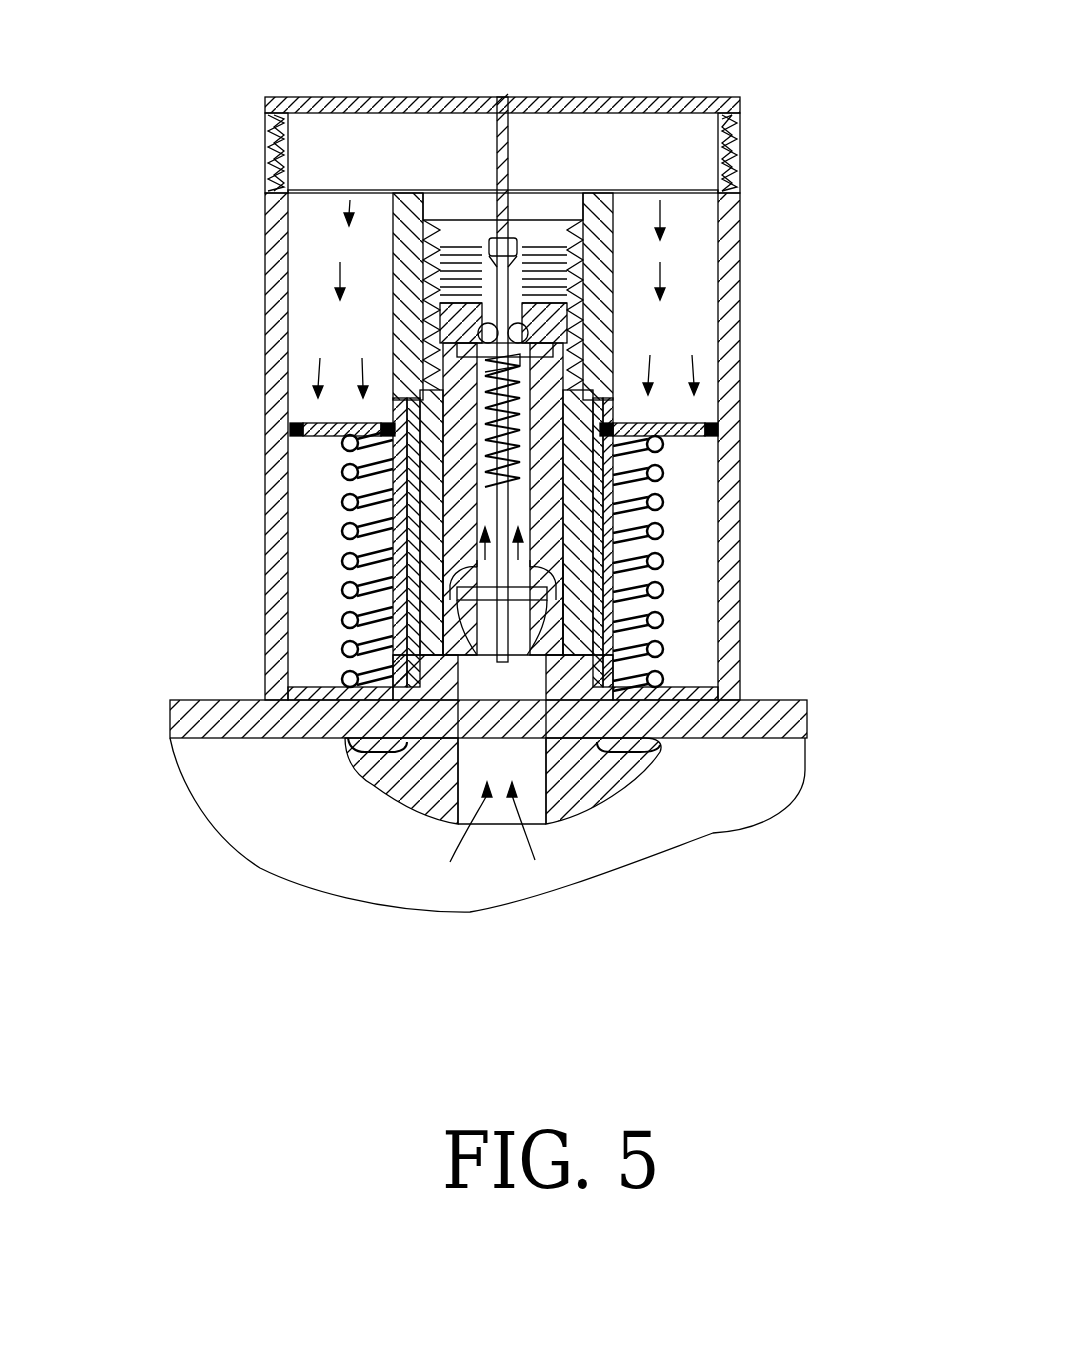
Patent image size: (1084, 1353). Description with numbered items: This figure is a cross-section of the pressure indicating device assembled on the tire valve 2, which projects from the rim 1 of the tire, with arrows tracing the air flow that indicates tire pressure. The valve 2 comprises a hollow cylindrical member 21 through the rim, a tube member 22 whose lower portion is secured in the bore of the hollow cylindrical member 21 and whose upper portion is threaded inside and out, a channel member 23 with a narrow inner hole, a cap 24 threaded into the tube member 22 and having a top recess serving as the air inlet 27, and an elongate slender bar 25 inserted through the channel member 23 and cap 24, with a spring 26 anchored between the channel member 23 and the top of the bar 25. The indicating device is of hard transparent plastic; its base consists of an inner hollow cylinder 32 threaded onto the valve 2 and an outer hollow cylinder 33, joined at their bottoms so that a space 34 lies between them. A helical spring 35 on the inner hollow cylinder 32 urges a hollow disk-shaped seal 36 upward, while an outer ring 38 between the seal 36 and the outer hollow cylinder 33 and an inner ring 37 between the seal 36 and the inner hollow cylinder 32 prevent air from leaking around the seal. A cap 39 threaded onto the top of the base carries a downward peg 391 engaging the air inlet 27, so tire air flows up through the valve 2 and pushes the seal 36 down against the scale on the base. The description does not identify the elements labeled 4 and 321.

The rim 1 is at (200, 715).
The valve 2 is at (232, 317).
The inner body 4 is at (440, 205).
The hollow cylindrical member 21 is at (350, 550).
The tube member 22 is at (410, 520).
The channel member 23 is at (350, 455).
The cap 24 is at (470, 300).
The elongate slender bar 25 is at (455, 268).
The spring 26 is at (335, 395).
The air inlet 27 is at (418, 172).
The inner hollow cylinder 32 is at (617, 393).
The outer hollow cylinder 33 is at (745, 355).
The space 34 is at (695, 247).
The helical spring 35 is at (665, 590).
The hollow disk-shaped seal 36 is at (643, 438).
The inner ring 37 is at (673, 465).
The outer ring 38 is at (715, 427).
The cap 39 is at (742, 130).
The threaded sleeve 321 is at (585, 322).
The downward peg 391 is at (513, 148).